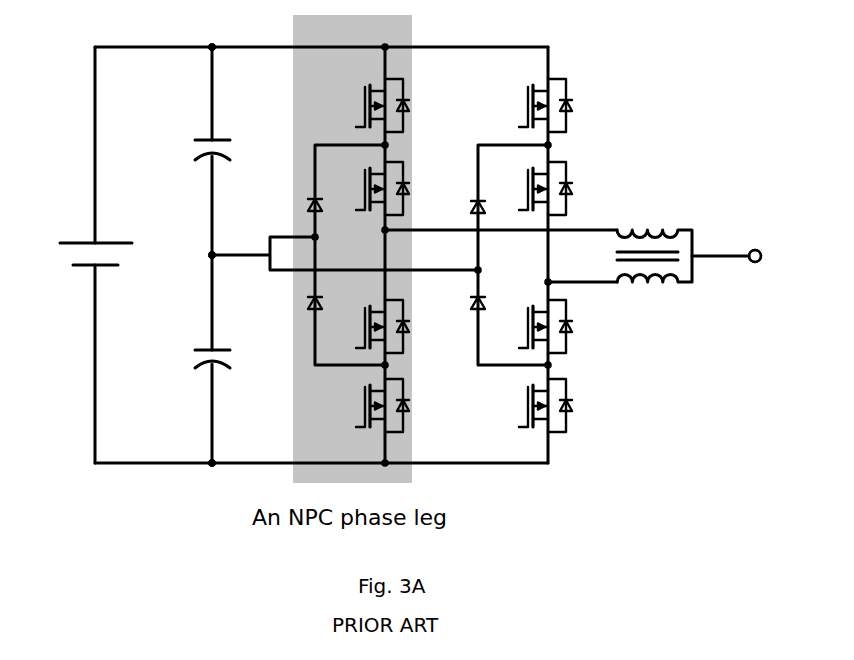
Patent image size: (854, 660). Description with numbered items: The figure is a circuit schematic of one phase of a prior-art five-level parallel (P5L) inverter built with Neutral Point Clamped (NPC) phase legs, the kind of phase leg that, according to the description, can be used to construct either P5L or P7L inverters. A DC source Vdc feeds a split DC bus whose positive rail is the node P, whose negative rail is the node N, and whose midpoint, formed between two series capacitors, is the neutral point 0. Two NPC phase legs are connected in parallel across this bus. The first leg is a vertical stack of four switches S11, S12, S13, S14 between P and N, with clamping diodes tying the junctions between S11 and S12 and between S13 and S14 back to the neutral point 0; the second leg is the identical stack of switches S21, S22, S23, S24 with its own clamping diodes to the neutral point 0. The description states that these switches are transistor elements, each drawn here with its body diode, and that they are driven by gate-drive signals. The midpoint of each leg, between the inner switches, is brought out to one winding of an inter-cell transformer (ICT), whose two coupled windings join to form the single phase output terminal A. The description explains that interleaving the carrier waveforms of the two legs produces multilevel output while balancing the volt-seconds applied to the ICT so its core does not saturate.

The upper outer switch of first NPC leg S11 is at (366, 105).
The upper inner switch of first NPC leg S12 is at (366, 188).
The lower inner switch of first NPC leg S13 is at (366, 326).
The lower outer switch of first NPC leg S14 is at (366, 405).
The upper outer switch of second NPC leg S21 is at (529, 105).
The upper inner switch of second NPC leg S22 is at (529, 188).
The lower inner switch of second NPC leg S23 is at (529, 326).
The lower outer switch of second NPC leg S24 is at (529, 405).
The DC source voltage Vdc is at (88, 233).
The positive DC rail node P is at (193, 34).
The neutral point node 0 is at (193, 256).
The negative DC rail node N is at (193, 479).
The phase output terminal A is at (736, 244).